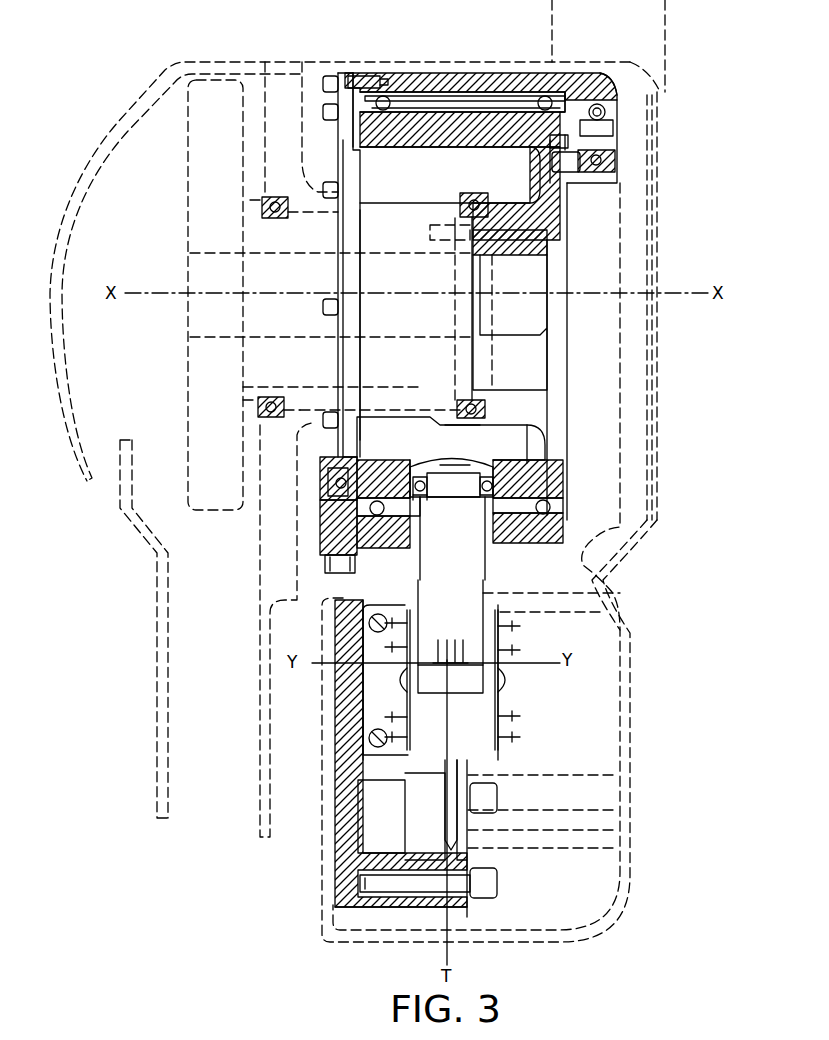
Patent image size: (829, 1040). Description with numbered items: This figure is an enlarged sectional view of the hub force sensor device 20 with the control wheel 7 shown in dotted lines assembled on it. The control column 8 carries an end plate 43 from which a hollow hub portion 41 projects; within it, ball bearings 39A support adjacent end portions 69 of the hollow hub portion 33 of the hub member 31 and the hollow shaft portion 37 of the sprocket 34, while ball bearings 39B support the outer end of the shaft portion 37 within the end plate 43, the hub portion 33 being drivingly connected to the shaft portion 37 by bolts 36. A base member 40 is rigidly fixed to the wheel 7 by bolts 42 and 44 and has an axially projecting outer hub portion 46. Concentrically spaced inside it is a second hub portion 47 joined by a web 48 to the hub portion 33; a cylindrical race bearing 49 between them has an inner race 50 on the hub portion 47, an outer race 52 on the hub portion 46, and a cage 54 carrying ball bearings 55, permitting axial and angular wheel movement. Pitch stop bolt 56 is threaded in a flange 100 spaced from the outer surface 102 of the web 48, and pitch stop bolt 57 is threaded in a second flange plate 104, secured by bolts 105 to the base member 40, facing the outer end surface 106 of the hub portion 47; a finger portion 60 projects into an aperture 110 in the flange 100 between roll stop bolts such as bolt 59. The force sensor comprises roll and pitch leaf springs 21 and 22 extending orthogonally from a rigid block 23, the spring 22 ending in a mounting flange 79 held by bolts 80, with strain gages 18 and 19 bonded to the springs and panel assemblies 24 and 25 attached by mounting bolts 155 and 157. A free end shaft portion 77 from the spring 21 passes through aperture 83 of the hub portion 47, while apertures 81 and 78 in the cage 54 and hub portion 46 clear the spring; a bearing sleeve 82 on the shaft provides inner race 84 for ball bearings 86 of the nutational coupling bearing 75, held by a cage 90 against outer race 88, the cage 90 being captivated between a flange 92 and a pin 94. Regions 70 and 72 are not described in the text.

The control wheel 7 is at (632, 690).
The control column 8 is at (103, 122).
The semiconductor strain gages 18 is at (445, 632).
The semiconductor strain gages 19 is at (452, 686).
The hub force sensor device 20 is at (490, 762).
The roll axis force sensing leaf spring 21 is at (470, 570).
The pitch axis force sensing leaf spring 22 is at (445, 805).
The intermediate rigid block 23 is at (460, 688).
The panel assembly 24 is at (400, 702).
The panel assembly 25 is at (505, 706).
The hub member 31 is at (552, 273).
The hollow hub portion 33 is at (548, 249).
The sprocket 34 is at (187, 164).
The bolts 36 is at (510, 322).
The hollow shaft portion 37 is at (382, 248).
The ball bearings 39A is at (476, 195).
The ball bearings 39B is at (273, 212).
The base member 40 is at (345, 822).
The hub portion 41 is at (395, 145).
The bolt 42 is at (628, 566).
The end plate 43 is at (345, 180).
The bolt 44 is at (555, 832).
The outer hub portion 46 is at (475, 80).
The second hub portion 47 is at (462, 145).
The web 48 is at (540, 425).
The cylindrical race bearing 49 is at (500, 96).
The inner race 50 is at (400, 118).
The outer race 52 is at (430, 98).
The ball bearing cage 54 is at (450, 108).
The ball bearings 55 is at (385, 96).
The stop bolt 56 is at (570, 172).
The stop bolt 57 is at (335, 483).
The stop bolt 59 is at (603, 108).
The finger portion 60 is at (605, 113).
The adjacent end portions 69 is at (466, 265).
The cavity 70 is at (487, 432).
The arm 72 is at (260, 548).
The nutational coupling bearing 75 is at (425, 462).
The free end shaft portion 77 is at (468, 478).
The aperture 78 is at (414, 535).
The mounting flange 79 is at (420, 900).
The fastening bolts 80 is at (500, 880).
The aperture 81 is at (478, 530).
The bearing sleeve 82 is at (490, 480).
The aperture 83 is at (424, 478).
The inner race 84 is at (452, 470).
The ball bearings 86 is at (415, 483).
The outer race 88 is at (420, 505).
The ball bearing cage 90 is at (490, 502).
The flange 92 is at (424, 505).
The pin 94 is at (462, 470).
The flange 100 is at (615, 182).
The outer surface 102 is at (552, 190).
The second flange plate 104 is at (338, 508).
The bolts 105 is at (345, 570).
The outer end surface 106 is at (350, 465).
The aperture 110 is at (612, 132).
The mounting bolt 155 is at (400, 678).
The mounting bolt 157 is at (508, 680).